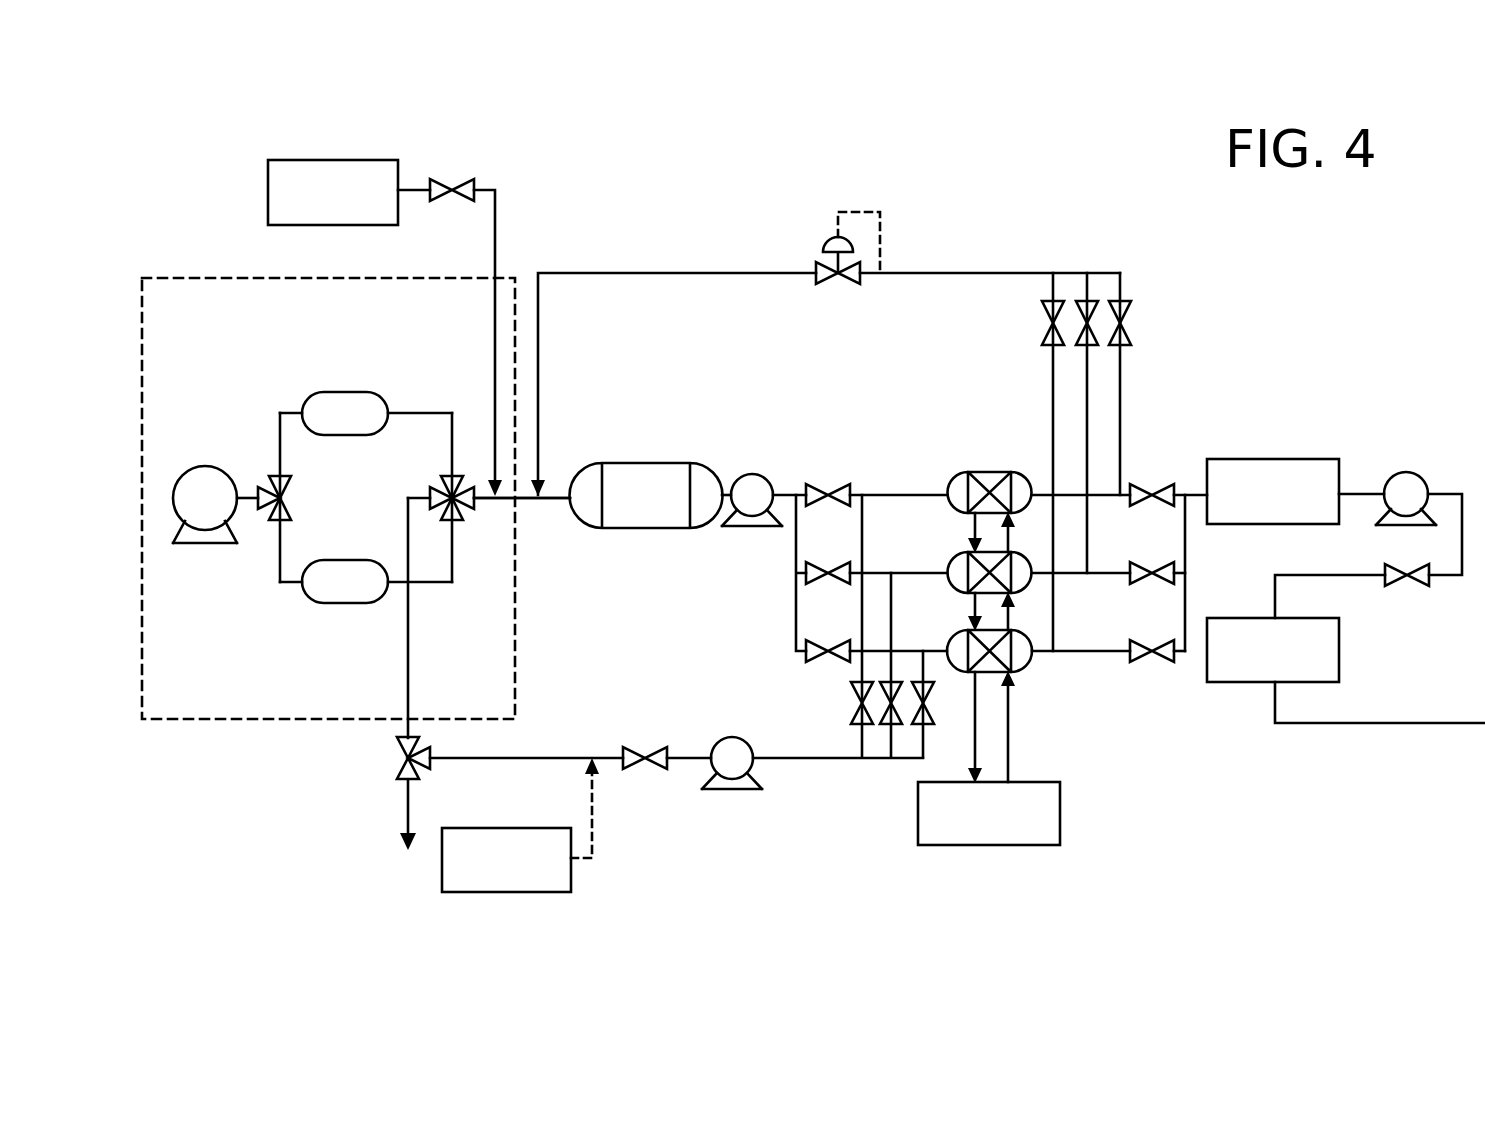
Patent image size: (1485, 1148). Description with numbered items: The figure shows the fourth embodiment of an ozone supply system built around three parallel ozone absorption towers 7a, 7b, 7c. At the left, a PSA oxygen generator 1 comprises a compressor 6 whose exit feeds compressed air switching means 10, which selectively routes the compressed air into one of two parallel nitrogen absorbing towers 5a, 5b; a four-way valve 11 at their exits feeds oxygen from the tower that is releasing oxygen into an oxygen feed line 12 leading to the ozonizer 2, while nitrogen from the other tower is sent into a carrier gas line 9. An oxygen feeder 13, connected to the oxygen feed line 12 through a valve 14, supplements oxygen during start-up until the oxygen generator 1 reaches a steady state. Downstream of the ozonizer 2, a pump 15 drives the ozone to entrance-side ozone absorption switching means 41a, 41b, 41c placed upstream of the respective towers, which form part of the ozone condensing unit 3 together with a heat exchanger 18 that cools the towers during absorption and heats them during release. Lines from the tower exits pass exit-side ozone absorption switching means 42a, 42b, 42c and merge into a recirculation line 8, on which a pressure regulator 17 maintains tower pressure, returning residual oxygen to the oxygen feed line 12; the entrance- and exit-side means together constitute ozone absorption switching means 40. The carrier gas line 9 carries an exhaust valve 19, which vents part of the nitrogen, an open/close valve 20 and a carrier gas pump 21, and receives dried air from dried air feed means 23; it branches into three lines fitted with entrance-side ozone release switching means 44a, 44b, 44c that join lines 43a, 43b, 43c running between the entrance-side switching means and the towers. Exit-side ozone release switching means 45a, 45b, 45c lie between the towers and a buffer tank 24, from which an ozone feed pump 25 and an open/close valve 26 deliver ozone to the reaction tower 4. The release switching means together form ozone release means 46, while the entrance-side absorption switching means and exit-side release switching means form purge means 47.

The PSA oxygen generator 1 is at (205, 718).
The ozonizer 2 is at (650, 440).
The ozone condensing unit 3 is at (888, 838).
The reaction tower 4 is at (1340, 660).
The nitrogen absorbing tower 5a is at (350, 391).
The nitrogen absorbing tower 5b is at (328, 604).
The compressor 6 is at (210, 476).
The ozone absorbing tower 7a is at (1010, 455).
The ozone absorbing tower 7b is at (950, 553).
The ozone absorbing tower 7c is at (1022, 668).
The recirculation line 8 is at (630, 272).
The carrier gas line 9 is at (797, 760).
The compressed air switching means 10 is at (292, 510).
The four-way valve 11 is at (430, 488).
The oxygen feed line 12 is at (500, 502).
The oxygen feeder 13 is at (370, 158).
The valve 14 is at (452, 181).
The pump 15 is at (752, 474).
The pressure regulator 17 is at (818, 262).
The heat exchanger 18 is at (1060, 820).
The exhaust valve 19 is at (402, 775).
The open/close valve 20 is at (638, 746).
The carrier gas pump 21 is at (732, 737).
The dried air feed means 23 is at (522, 827).
The buffer tank 24 is at (1330, 428).
The ozone feed pump 25 is at (1422, 444).
The open/close valve 26 is at (1385, 568).
The ozone absorption switching means 40 is at (1080, 266).
The entrance-side ozone absorption switching means 41a is at (840, 462).
The entrance-side ozone absorption switching means 41b is at (806, 567).
The entrance-side ozone absorption switching means 41c is at (806, 642).
The exit-side ozone absorption switching means 42a is at (1130, 334).
The exit-side ozone absorption switching means 42b is at (1080, 338).
The exit-side ozone absorption switching means 42c is at (1042, 336).
The line 43a is at (880, 494).
The line 43b is at (884, 572).
The line 43c is at (906, 650).
The entrance-side ozone release switching means 44a is at (851, 716).
The entrance-side ozone release switching means 44b is at (888, 726).
The entrance-side ozone release switching means 44c is at (920, 727).
The exit-side ozone release switching means 45a is at (1167, 463).
The exit-side ozone release switching means 45b is at (1143, 562).
The exit-side ozone release switching means 45c is at (1143, 640).
The ozone release means 46 is at (1140, 681).
The purge means 47 is at (797, 424).